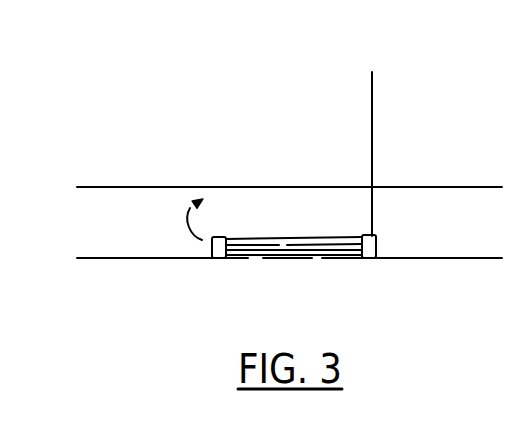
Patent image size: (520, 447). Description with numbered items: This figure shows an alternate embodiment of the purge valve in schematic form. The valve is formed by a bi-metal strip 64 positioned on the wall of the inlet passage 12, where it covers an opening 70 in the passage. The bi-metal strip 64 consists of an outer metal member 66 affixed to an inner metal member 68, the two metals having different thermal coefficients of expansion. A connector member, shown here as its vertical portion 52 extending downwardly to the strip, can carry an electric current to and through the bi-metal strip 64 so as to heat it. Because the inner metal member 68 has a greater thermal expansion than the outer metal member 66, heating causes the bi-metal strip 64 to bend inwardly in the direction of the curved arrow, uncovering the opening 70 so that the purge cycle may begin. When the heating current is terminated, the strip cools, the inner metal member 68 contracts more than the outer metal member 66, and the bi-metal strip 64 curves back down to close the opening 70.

The inlet passage 12 is at (113, 225).
The second vertical portion 52 is at (373, 118).
The bi-metal strip 64 is at (257, 237).
The outer metal member 66 is at (284, 244).
The inner metal member 68 is at (310, 251).
The opening 70 is at (263, 256).